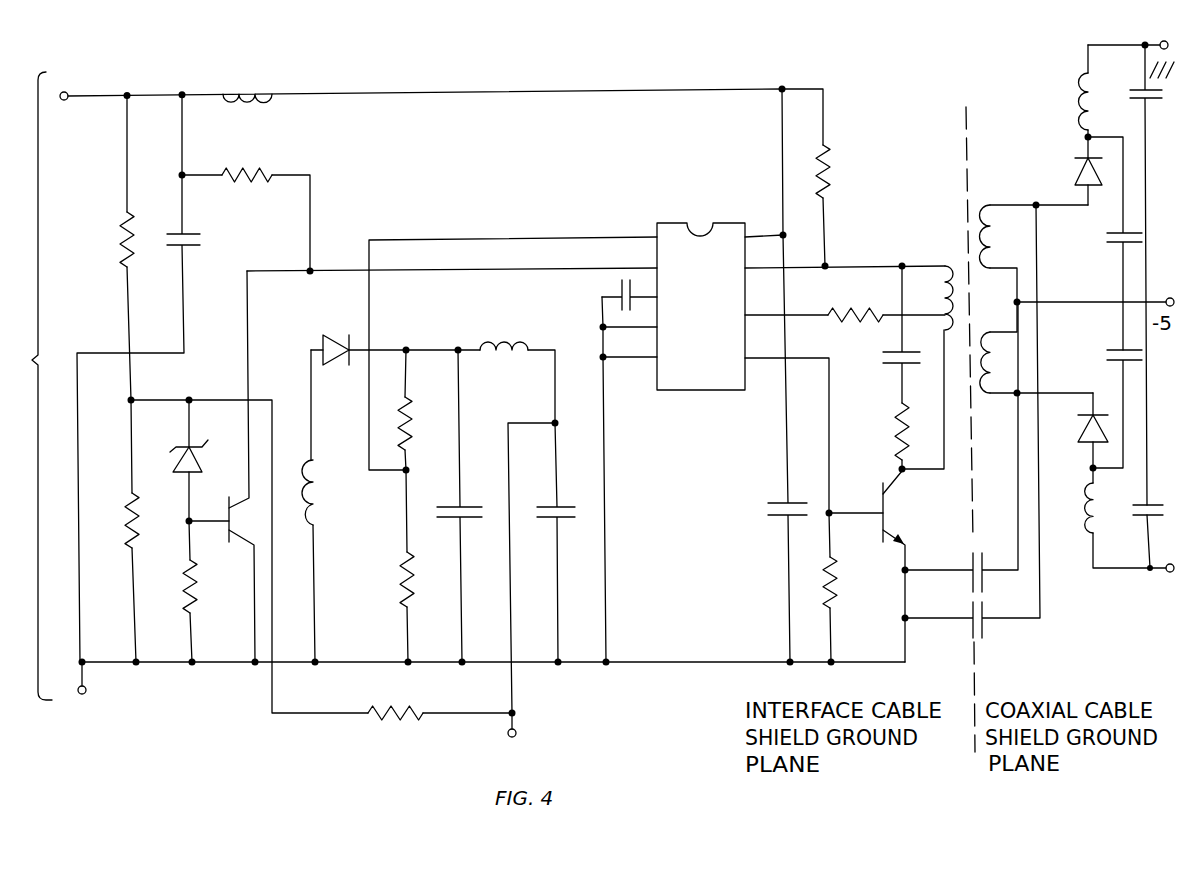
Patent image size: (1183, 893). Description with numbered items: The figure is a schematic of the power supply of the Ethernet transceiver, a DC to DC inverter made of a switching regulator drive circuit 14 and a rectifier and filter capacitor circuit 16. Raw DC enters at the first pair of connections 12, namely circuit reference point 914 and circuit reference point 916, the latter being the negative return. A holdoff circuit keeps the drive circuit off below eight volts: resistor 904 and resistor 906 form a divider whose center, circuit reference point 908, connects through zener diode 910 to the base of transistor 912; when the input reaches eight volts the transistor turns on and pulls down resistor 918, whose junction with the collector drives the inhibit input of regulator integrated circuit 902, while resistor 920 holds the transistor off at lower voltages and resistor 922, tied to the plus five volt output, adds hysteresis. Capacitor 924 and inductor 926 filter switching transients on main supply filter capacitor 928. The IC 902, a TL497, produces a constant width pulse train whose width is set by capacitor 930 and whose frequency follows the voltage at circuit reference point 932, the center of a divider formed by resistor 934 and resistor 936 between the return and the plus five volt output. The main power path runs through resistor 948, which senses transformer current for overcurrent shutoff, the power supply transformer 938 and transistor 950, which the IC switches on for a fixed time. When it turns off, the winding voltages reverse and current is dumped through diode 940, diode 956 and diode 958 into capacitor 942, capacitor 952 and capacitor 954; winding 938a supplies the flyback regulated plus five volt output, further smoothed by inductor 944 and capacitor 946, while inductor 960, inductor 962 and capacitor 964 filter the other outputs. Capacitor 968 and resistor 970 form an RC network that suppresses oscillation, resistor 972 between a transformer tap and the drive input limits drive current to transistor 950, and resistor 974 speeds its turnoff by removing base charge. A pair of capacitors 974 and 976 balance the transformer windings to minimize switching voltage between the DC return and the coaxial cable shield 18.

The first pair of connections 12 is at (32, 386).
The switching regulator drive circuit 14 is at (395, 82).
The rectifier and filter capacitor circuit 16 is at (1060, 55).
The shield 18 is at (1142, 50).
The regulator integrated circuit 902 is at (672, 222).
The resistor 904 is at (125, 240).
The resistor 906 is at (130, 530).
The circuit reference point 908 is at (135, 399).
The zener diode 910 is at (178, 450).
The transistor 912 is at (226, 506).
The circuit reference point 914 is at (80, 84).
The circuit reference point 916 is at (86, 672).
The resistor 918 is at (252, 173).
The resistor 920 is at (192, 614).
The resistor 922 is at (405, 702).
The capacitor 924 is at (186, 240).
The inductor 926 is at (228, 94).
The main supply filter capacitor 928 is at (781, 502).
The capacitor 930 is at (612, 295).
The circuit reference point 932 is at (404, 474).
The resistor 934 is at (408, 435).
The resistor 936 is at (400, 575).
The power supply transformer 938 is at (959, 242).
The winding 938a is at (312, 500).
The diode 940 is at (322, 342).
The capacitor 942 is at (476, 500).
The inductor 944 is at (500, 338).
The capacitor 946 is at (571, 500).
The resistor 948 is at (828, 178).
The transistor 950 is at (893, 494).
The capacitor 952 is at (1115, 232).
The capacitor 954 is at (1121, 348).
The diode 956 is at (1078, 172).
The diode 958 is at (1085, 428).
The inductor 960 is at (1075, 78).
The inductor 962 is at (1080, 515).
The capacitor 964 is at (1128, 96).
The capacitor 968 is at (890, 366).
The resistor 970 is at (897, 418).
The resistor 972 is at (858, 306).
The resistor 974 is at (838, 585).
The capacitor 976 is at (988, 620).